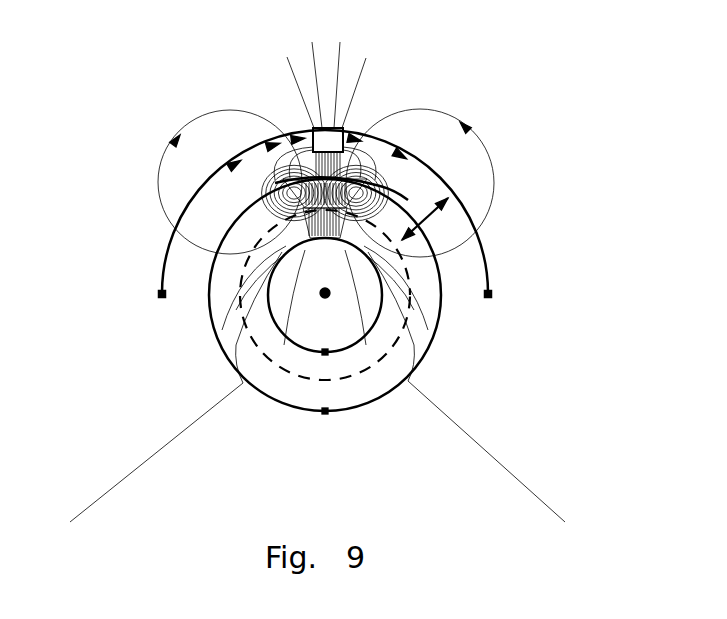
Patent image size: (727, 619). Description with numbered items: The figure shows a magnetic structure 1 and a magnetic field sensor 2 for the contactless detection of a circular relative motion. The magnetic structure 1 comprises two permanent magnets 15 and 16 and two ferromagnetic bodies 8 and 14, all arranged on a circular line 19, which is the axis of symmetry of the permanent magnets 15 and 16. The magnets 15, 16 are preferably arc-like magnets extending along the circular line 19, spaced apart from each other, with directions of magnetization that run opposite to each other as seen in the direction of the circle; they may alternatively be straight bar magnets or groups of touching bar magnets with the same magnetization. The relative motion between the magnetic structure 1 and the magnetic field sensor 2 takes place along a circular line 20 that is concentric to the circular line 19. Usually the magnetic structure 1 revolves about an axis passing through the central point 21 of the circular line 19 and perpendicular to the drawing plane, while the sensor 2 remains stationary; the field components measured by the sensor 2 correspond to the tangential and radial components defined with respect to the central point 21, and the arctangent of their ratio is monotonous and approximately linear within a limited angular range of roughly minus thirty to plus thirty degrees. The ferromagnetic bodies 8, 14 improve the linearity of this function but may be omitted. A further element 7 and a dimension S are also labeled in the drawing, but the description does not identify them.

The magnetic structure 1 is at (185, 314).
The magnetic field sensor 2 is at (340, 133).
The field line region 7 is at (162, 208).
The ferromagnetic body 8 is at (327, 198).
The ferromagnetic body 14 is at (428, 342).
The permanent magnet 15 is at (298, 198).
The permanent magnet 16 is at (270, 192).
The circular line 19 is at (352, 377).
The circular line 20 is at (489, 291).
The central point 21 is at (325, 296).
The distance S is at (450, 220).